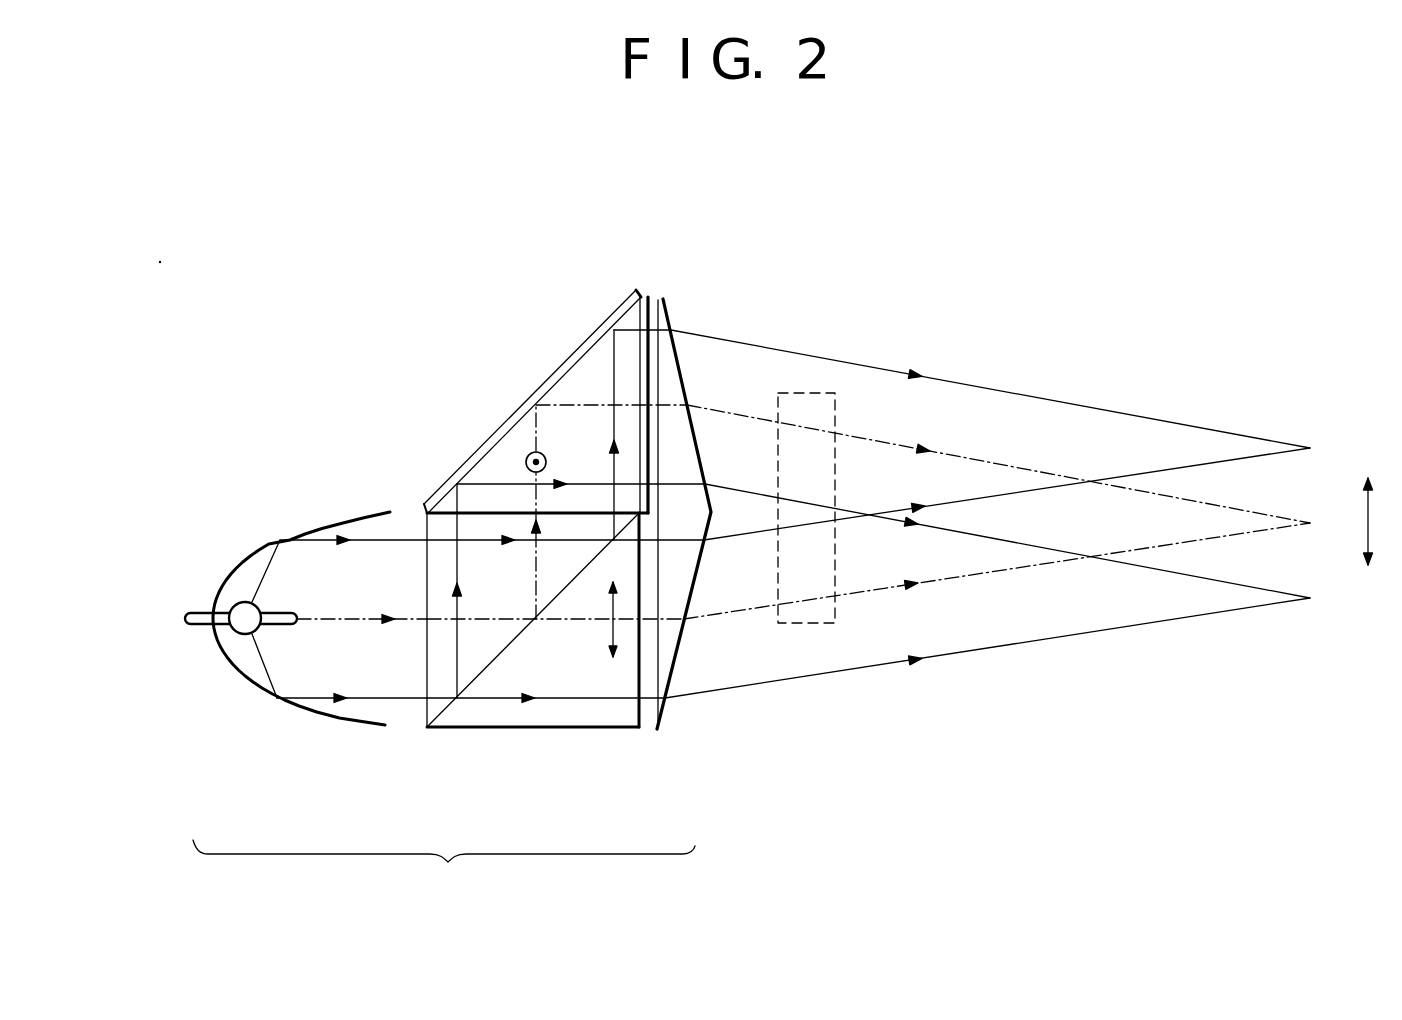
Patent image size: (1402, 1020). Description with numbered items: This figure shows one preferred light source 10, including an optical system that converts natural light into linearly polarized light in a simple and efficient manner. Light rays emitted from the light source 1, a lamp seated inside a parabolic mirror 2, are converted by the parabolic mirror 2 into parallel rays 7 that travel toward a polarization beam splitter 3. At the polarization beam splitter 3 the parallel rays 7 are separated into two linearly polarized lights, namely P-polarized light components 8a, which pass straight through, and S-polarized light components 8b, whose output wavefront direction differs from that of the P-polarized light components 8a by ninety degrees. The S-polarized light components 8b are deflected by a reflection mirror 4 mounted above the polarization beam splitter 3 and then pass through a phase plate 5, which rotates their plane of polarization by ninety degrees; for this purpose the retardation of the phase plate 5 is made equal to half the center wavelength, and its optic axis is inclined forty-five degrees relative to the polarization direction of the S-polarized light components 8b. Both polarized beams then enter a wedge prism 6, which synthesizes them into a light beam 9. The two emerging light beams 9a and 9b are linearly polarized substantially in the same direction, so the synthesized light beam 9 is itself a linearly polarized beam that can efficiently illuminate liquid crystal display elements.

The light source 1 is at (230, 638).
The parabolic mirror 2 is at (305, 707).
The polarization beam splitter 3 is at (497, 730).
The reflection mirror 4 is at (557, 372).
The phase plate 5 is at (650, 297).
The wedge prism 6 is at (672, 318).
The parallel rays 7 is at (358, 615).
The P-polarized light components 8a is at (563, 624).
The S-polarized light components 8b is at (532, 443).
The light beam 9 is at (818, 392).
The light beam 9a is at (732, 600).
The light beam 9b is at (730, 410).
The light source 10 is at (465, 906).